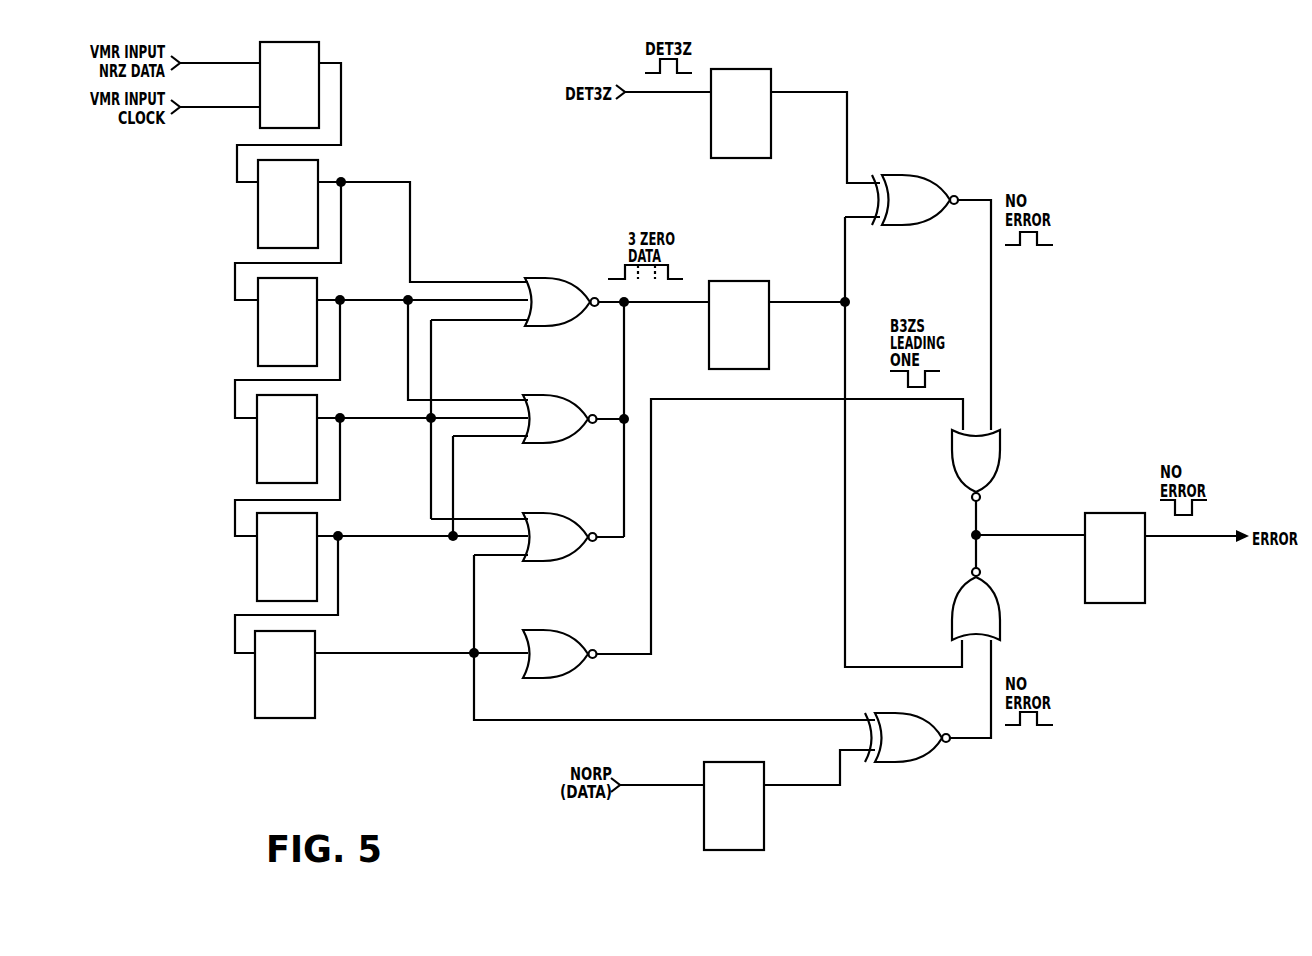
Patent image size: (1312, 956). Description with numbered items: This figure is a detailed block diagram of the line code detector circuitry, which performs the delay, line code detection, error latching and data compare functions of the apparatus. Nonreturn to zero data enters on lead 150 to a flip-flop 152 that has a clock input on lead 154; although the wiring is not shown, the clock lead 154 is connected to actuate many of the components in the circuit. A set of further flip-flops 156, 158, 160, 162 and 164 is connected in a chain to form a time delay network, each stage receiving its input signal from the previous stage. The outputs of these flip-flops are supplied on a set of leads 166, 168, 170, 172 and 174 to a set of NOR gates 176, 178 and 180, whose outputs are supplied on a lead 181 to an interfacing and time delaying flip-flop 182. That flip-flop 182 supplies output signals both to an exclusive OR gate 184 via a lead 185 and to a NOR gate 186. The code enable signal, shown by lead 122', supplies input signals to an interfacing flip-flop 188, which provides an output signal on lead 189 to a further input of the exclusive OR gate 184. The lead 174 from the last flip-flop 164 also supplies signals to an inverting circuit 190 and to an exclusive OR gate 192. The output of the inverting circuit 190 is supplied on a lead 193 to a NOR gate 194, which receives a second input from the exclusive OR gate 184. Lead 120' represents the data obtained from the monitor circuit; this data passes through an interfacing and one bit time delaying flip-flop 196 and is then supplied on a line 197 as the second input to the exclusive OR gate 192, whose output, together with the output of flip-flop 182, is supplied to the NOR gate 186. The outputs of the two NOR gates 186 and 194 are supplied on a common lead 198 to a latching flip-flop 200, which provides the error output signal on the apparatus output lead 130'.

The lead 150 is at (217, 62).
The flip-flop 152 is at (322, 56).
The clock lead 154 is at (215, 109).
The flip-flop 156 is at (258, 222).
The flip-flop 158 is at (258, 342).
The flip-flop 160 is at (257, 462).
The flip-flop 162 is at (257, 578).
The flip-flop 164 is at (255, 690).
The lead 166 is at (387, 181).
The lead 168 is at (372, 299).
The lead 170 is at (372, 417).
The lead 172 is at (378, 535).
The lead 174 is at (380, 652).
The NOR gate 176 is at (546, 277).
The NOR gate 178 is at (546, 394).
The NOR gate 180 is at (548, 512).
The lead 181 is at (672, 304).
The interfacing and time delaying flip-flop 182 is at (769, 338).
The lead 185 is at (810, 301).
The exclusive OR gate 184 is at (905, 175).
The NOR gate 186 is at (1000, 612).
The interfacing flip-flop 188 is at (771, 132).
The lead 189 is at (823, 91).
The inverting circuit 190 is at (545, 629).
The exclusive OR gate 192 is at (905, 763).
The lead 193 is at (760, 400).
The NOR gate 194 is at (1000, 450).
The interfacing and one bit time delaying flip-flop 196 is at (764, 820).
The line 197 is at (797, 784).
The common lead 198 is at (1030, 534).
The latching flip-flop 200 is at (1085, 580).
The code enable signal lead 122' is at (663, 116).
The lead 120' is at (657, 763).
The apparatus output lead 130' is at (1197, 562).